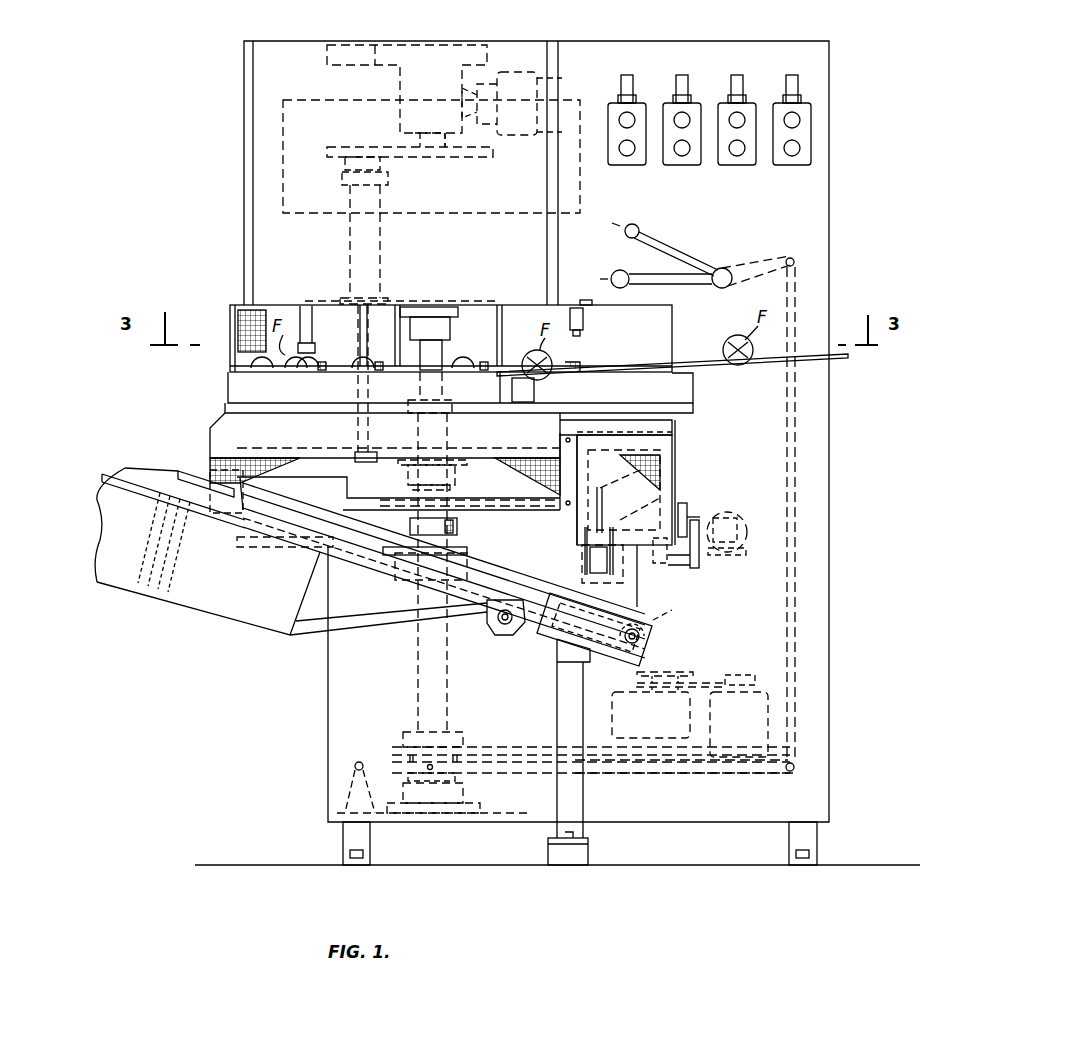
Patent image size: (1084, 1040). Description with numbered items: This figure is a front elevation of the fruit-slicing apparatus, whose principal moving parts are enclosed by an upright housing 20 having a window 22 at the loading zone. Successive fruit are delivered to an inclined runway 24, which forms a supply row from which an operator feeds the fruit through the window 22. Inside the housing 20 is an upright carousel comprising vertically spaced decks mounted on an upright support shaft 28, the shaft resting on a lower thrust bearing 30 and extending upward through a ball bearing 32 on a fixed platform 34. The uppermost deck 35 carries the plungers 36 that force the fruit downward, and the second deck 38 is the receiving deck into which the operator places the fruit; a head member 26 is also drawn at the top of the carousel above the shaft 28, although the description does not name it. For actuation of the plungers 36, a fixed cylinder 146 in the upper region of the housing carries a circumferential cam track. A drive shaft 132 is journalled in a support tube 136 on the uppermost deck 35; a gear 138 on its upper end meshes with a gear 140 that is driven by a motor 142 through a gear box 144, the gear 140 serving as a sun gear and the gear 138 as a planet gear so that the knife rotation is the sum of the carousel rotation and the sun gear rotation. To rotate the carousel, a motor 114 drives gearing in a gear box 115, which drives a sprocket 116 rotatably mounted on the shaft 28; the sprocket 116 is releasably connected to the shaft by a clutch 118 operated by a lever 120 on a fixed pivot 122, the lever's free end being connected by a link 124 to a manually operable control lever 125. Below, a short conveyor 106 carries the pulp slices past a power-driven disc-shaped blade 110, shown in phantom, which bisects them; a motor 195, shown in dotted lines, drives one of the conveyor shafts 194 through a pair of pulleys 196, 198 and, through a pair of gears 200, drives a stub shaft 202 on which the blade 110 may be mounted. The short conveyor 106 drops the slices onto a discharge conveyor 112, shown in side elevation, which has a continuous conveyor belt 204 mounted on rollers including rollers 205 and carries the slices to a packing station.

The upright housing 20 is at (244, 155).
The window 22 is at (512, 310).
The inclined runway 24 is at (725, 365).
The head block 26 is at (440, 325).
The upright support shaft 28 is at (442, 352).
The lower thrust bearing 30 is at (447, 795).
The ball bearing 32 is at (402, 582).
The fixed platform 34 is at (255, 548).
The uppermost deck 35 is at (410, 305).
The plungers 36 is at (305, 318).
The second deck 38 is at (500, 385).
The short conveyor 106 is at (607, 583).
The disc-shaped blade 110 is at (672, 450).
The discharge conveyor 112 is at (665, 622).
The motor 114 is at (700, 765).
The gear box 115 is at (612, 705).
The sprocket 116 is at (445, 742).
The clutch 118 is at (455, 778).
The lever 120 is at (630, 778).
The fixed pivot 122 is at (360, 762).
The link 124 is at (800, 568).
The control lever 125 is at (760, 262).
The drive shaft 132 is at (327, 329).
The support tube 136 is at (352, 225).
The gear 138 is at (370, 130).
The gear 140 is at (458, 157).
The motor 142 is at (522, 72).
The gear box 144 is at (400, 84).
The fixed cylinder 146 is at (283, 195).
The shafts 194 is at (642, 557).
The motor 195 is at (745, 525).
The pulley 196 is at (700, 515).
The pulley 198 is at (700, 560).
The gears 200 is at (700, 505).
The stub shaft 202 is at (660, 500).
The conveyor belt 204 is at (120, 470).
The rollers 205 is at (508, 630).